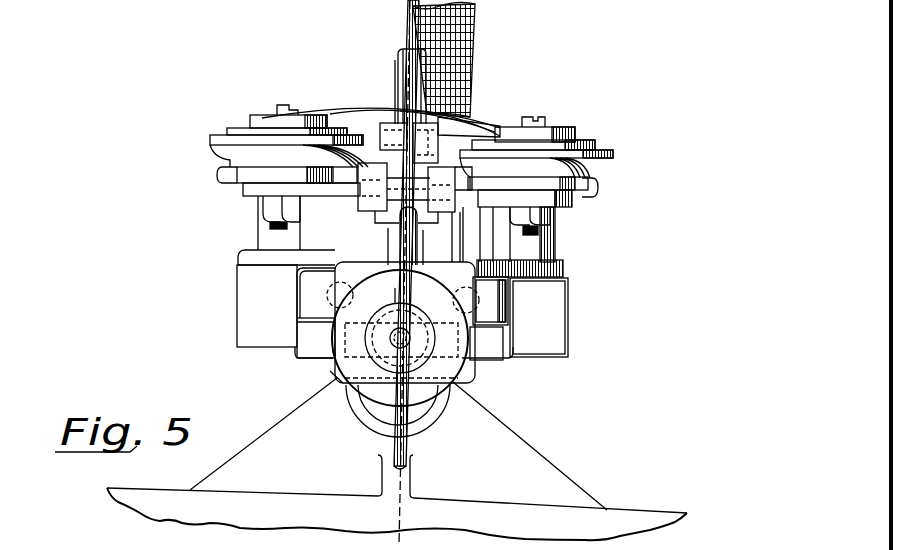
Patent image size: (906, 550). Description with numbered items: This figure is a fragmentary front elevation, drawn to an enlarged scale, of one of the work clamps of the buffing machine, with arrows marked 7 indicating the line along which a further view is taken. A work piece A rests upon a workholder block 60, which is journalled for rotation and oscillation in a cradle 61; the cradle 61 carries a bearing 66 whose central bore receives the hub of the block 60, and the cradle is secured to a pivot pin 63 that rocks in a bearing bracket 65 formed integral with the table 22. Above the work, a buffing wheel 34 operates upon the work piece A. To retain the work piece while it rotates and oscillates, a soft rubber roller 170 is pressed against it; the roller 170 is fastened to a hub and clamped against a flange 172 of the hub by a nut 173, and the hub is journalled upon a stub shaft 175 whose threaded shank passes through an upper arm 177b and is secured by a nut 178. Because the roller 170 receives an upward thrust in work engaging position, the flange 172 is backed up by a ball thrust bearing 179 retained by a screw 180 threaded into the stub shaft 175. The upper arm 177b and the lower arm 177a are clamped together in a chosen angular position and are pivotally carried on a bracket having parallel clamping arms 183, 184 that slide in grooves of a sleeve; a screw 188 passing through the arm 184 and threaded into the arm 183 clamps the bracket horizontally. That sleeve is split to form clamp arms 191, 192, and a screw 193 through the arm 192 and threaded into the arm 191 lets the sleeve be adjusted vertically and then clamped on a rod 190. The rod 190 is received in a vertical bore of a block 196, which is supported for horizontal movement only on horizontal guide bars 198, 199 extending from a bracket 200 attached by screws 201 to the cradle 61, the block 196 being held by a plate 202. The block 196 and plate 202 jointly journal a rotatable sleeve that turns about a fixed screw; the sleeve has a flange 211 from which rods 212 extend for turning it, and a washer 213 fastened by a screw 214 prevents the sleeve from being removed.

The section line 7- 7 is at (420, 15).
The table 22 is at (624, 512).
The buffing wheel 34 is at (472, 66).
The workholder block 60 is at (245, 252).
The cradle 61 is at (237, 300).
The pivot pin 63 is at (420, 432).
The bearing bracket 65 is at (526, 441).
The bearing 66 is at (243, 262).
The soft rubber roller 170 is at (212, 137).
The flange 172 is at (238, 128).
The nut 173 is at (242, 185).
The stub shaft 175 is at (298, 240).
The lower arm 177a is at (256, 197).
The upper arm 177b is at (575, 212).
The nut 178 is at (262, 222).
The ball thrust bearing 179 is at (263, 97).
The screw 180 is at (287, 105).
The clamping arm 183 is at (370, 162).
The clamping arm 184 is at (518, 160).
The screw 188 is at (531, 168).
The rod 190 is at (400, 60).
The clamp arm 191 is at (397, 100).
The clamp arm 192 is at (478, 126).
The screw 193 is at (390, 110).
The block 196 is at (350, 262).
The horizontal guide bar 198 is at (300, 324).
The horizontal guide bar 199 is at (493, 335).
The bracket 200 is at (502, 295).
The screw 201 is at (330, 295).
The plate 202 is at (340, 380).
The flange 211 is at (328, 371).
The rod 212 is at (406, 226).
The washer 213 is at (395, 305).
The screw 214 is at (395, 345).
The work piece A is at (332, 116).